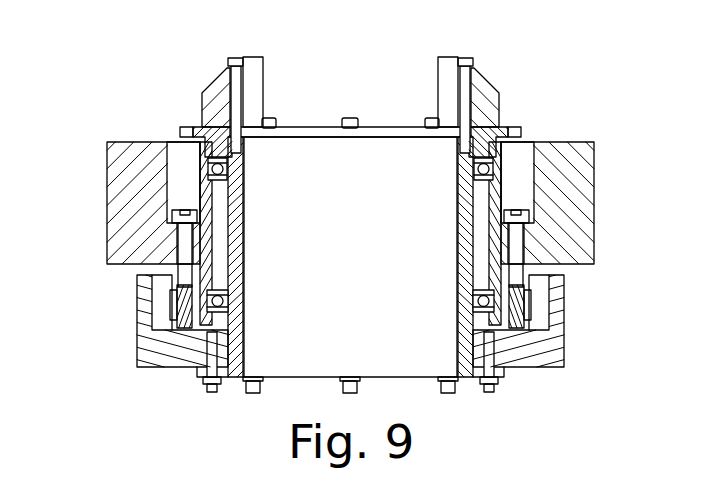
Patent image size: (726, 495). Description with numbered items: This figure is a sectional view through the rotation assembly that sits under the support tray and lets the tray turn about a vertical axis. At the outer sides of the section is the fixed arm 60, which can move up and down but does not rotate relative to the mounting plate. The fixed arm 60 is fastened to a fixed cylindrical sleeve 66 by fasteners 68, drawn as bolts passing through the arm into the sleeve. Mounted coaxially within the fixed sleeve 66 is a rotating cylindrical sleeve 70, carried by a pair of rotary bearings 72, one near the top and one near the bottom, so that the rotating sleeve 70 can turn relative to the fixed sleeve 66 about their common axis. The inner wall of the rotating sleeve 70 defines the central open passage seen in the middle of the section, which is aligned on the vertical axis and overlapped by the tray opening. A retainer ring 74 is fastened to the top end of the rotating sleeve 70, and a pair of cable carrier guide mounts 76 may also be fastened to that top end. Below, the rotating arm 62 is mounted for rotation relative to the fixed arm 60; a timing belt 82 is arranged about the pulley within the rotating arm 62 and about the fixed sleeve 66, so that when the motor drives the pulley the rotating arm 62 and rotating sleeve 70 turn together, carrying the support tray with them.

The fixed arm 60 is at (108, 197).
The rotating arm 62 is at (145, 367).
The fixed cylindrical sleeve 66 is at (210, 207).
The fasteners 68 is at (187, 243).
The rotating cylindrical sleeve 70 is at (457, 280).
The rotary bearings 72 is at (227, 170).
The retainer ring 74 is at (198, 127).
The cable carrier guide mounts 76 is at (498, 105).
The timing belt 82 is at (170, 304).